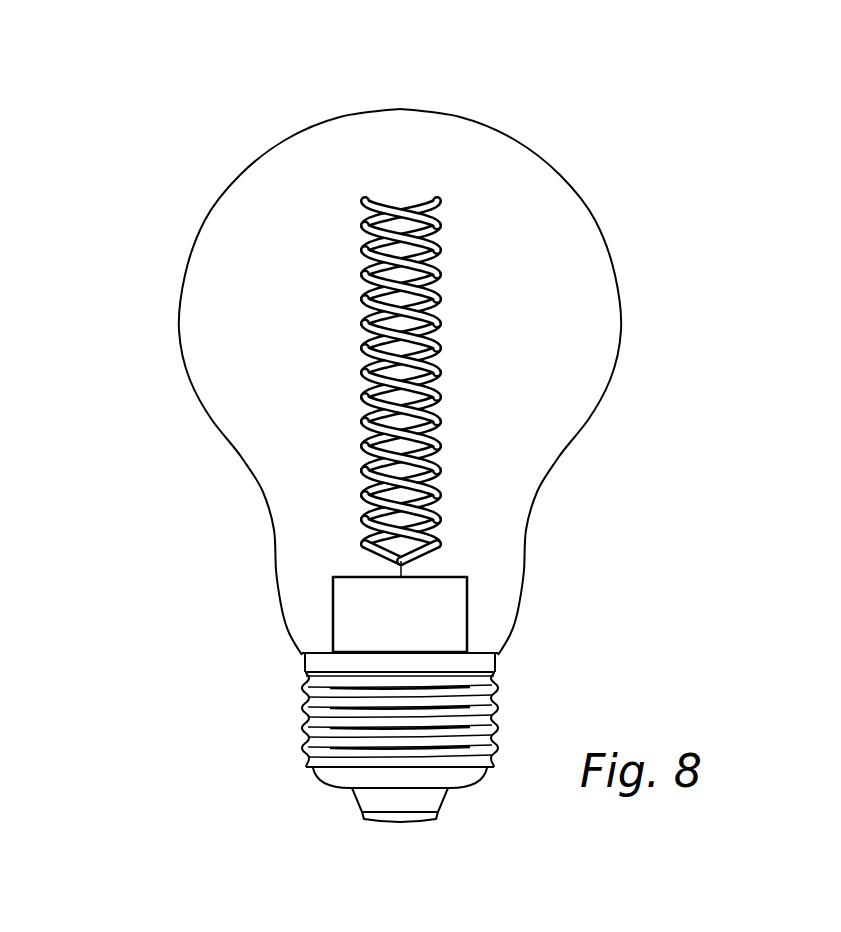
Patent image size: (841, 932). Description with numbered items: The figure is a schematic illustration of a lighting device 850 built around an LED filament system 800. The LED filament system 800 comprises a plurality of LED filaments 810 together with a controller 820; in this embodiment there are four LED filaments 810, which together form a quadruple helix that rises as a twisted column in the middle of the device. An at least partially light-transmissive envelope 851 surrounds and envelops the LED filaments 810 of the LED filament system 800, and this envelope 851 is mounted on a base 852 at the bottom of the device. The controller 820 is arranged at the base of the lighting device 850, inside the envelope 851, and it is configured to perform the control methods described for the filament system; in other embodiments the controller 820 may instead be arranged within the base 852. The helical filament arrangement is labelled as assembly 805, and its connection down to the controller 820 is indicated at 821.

The lighting device 850 is at (560, 98).
The LED filament system 800 is at (308, 214).
The filament assembly 805 is at (430, 166).
The LED filaments 810 is at (440, 197).
The envelope 851 is at (198, 232).
The controller 820 is at (333, 613).
The stem connector 821 is at (403, 575).
The base 852 is at (303, 712).